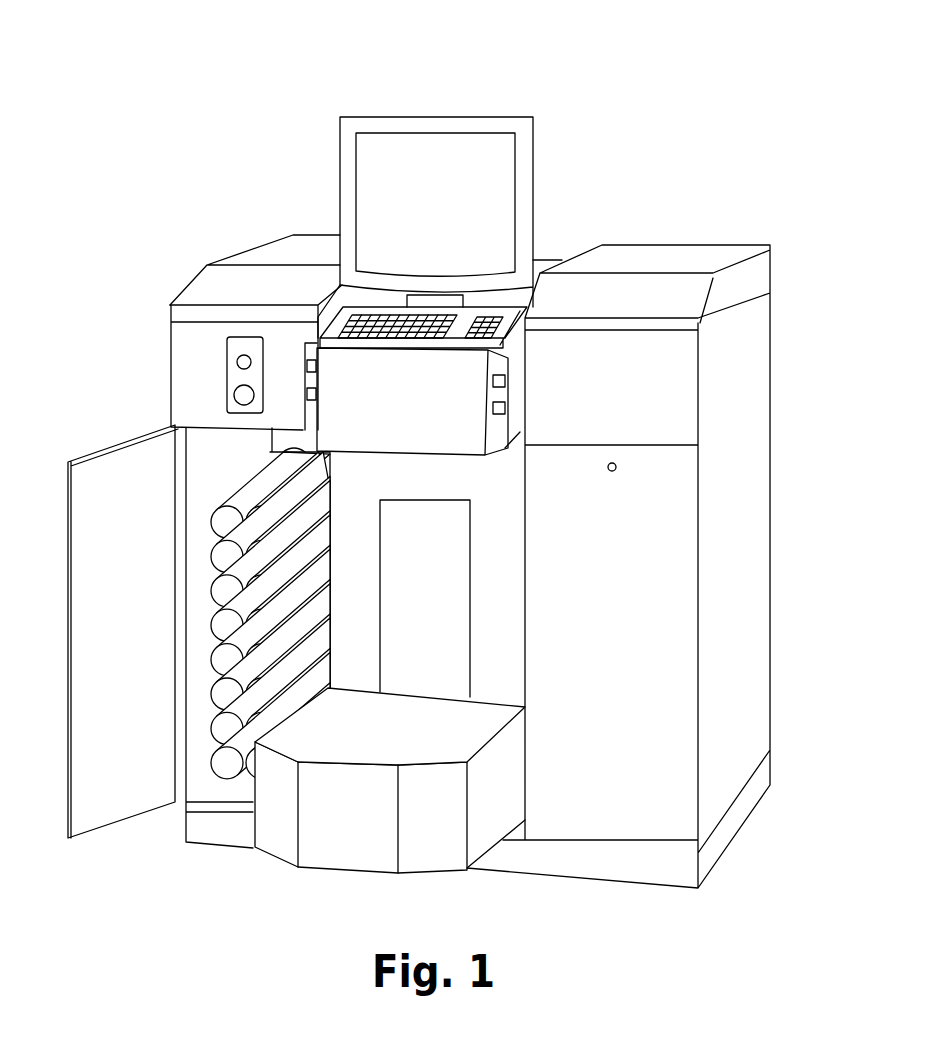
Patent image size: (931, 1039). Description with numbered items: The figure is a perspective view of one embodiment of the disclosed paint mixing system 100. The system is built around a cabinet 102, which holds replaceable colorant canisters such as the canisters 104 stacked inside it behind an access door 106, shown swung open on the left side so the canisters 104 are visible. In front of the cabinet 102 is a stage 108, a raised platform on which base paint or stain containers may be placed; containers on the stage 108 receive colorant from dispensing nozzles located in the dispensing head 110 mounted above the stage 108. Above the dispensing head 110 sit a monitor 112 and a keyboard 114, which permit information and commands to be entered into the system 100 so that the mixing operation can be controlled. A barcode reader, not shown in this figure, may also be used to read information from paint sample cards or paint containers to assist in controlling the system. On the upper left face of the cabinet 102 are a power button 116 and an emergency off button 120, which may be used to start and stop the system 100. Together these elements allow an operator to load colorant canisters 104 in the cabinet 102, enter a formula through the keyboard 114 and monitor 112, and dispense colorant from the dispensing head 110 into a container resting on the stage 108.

The paint mixing system 100 is at (672, 82).
The cabinet 102 is at (738, 558).
The canisters 104 is at (230, 730).
The access door 106 is at (110, 808).
The stage 108 is at (452, 725).
The dispensing head 110 is at (462, 415).
The monitor 112 is at (493, 202).
The keyboard 114 is at (520, 312).
The power button 116 is at (237, 362).
The emergency off button 120 is at (232, 395).